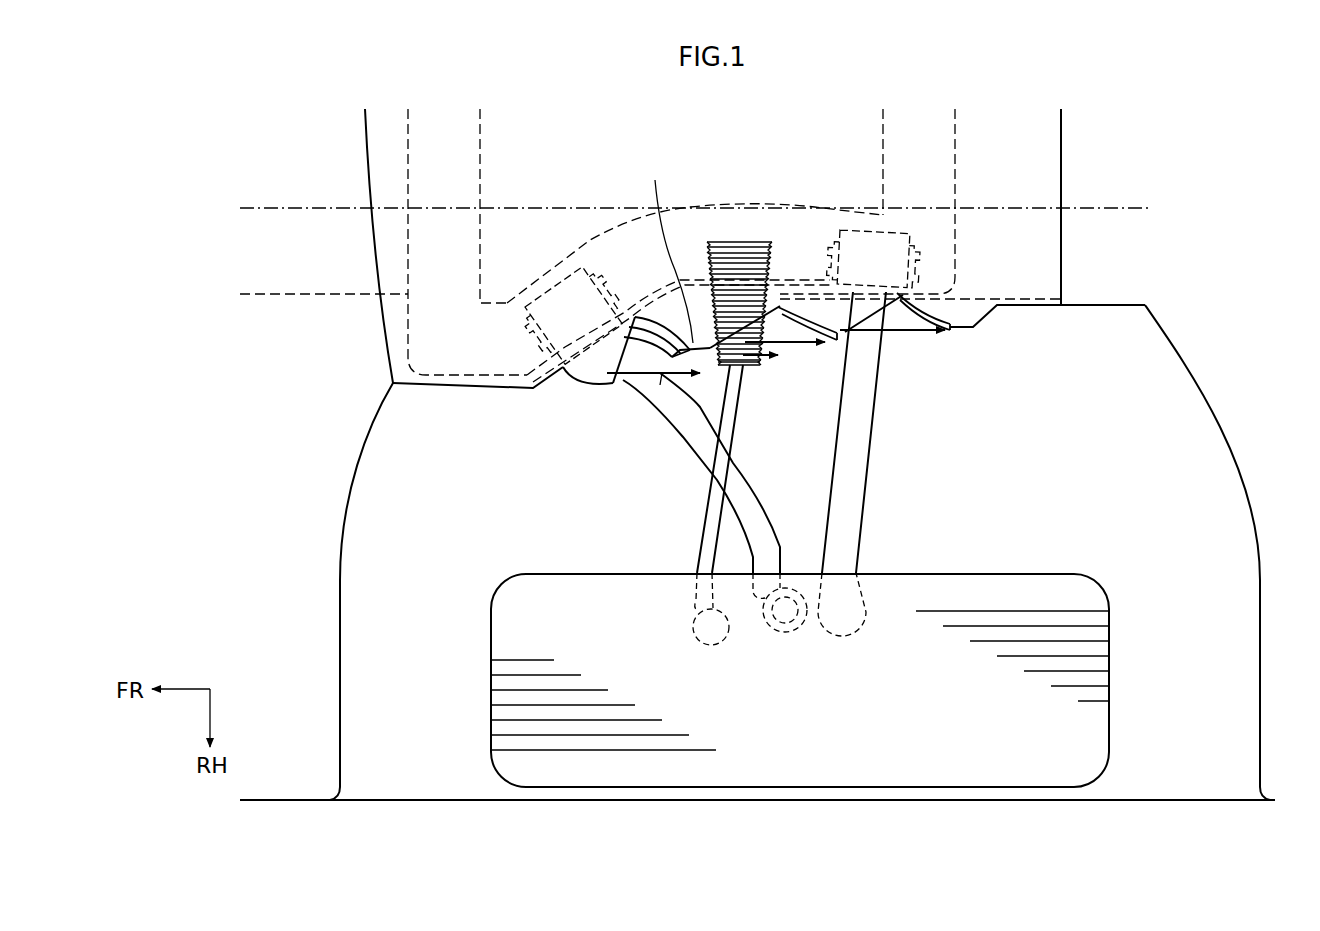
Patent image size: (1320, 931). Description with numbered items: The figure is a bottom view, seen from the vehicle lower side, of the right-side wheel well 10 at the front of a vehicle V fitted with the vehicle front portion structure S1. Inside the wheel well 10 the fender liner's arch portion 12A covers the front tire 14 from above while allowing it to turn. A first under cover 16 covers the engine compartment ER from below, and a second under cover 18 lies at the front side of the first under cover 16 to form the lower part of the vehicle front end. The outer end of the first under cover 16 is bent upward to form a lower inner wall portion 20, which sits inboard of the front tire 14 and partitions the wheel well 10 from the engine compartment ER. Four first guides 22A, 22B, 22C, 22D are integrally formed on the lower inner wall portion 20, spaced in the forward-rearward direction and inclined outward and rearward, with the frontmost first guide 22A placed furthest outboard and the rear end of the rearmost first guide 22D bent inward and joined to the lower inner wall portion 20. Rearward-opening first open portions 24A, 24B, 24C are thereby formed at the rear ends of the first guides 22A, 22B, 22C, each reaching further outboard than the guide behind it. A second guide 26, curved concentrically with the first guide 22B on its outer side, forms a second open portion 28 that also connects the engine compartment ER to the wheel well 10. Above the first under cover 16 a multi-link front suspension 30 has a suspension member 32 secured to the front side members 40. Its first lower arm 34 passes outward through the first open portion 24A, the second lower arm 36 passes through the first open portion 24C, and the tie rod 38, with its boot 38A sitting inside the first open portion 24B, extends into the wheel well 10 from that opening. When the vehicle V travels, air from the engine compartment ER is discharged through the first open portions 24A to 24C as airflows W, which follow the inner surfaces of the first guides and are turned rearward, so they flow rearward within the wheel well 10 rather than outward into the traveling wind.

The wheel well 10 is at (418, 806).
The arch portion 12A is at (355, 558).
The front tire 14 is at (491, 648).
The first under cover 16 is at (1063, 262).
The second under cover 18 is at (320, 453).
The lower inner wall portion 20 is at (500, 388).
The first guide 22A is at (583, 387).
The first guide 22B is at (647, 312).
The first guide 22C is at (792, 302).
The first guide 22D is at (913, 300).
The first open portion 24A is at (575, 265).
The first open portion 24B is at (733, 233).
The first open portion 24C is at (863, 225).
The second guide 26 is at (660, 385).
The second open portion 28 is at (663, 247).
The front suspension 30 is at (957, 117).
The suspension member 32 is at (407, 148).
The first lower arm 34 is at (697, 477).
The second lower arm 36 is at (865, 445).
The tie rod 38 is at (738, 452).
The boot 38A is at (760, 368).
The front side member 40 is at (292, 294).
The airflow W is at (638, 382).
The engine compartment ER is at (845, 137).
The vehicle front portion structure S1 is at (950, 420).
The vehicle V is at (235, 483).